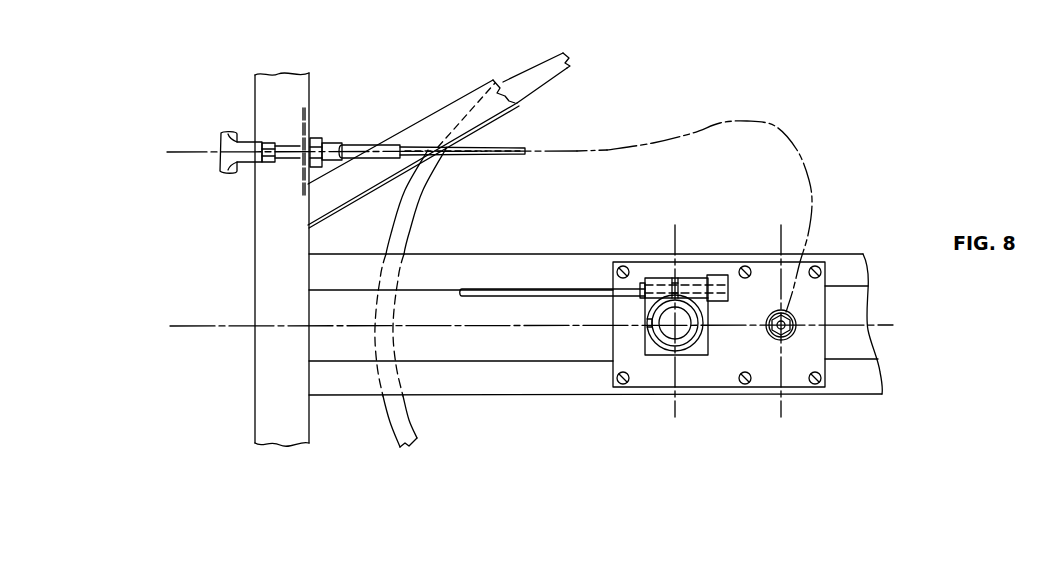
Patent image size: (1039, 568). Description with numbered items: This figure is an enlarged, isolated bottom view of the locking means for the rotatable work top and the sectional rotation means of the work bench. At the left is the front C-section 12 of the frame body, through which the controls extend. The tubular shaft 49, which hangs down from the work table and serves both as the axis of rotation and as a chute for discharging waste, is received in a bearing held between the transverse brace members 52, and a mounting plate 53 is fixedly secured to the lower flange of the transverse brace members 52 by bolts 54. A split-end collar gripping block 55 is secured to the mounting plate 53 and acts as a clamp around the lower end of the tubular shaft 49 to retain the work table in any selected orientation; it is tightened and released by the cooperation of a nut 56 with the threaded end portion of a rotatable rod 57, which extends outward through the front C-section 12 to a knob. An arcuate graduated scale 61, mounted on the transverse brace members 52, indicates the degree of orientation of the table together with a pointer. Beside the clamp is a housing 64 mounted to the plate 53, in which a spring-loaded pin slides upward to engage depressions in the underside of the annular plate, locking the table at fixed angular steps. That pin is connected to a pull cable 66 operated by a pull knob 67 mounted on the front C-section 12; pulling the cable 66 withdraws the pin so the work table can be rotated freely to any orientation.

The front C-section 12 is at (268, 291).
The tubular shaft 49 is at (663, 348).
The transverse brace members 52 is at (437, 267).
The mounting plate 53 is at (817, 310).
The bolts 54 is at (627, 264).
The split-end collar gripping block 55 is at (658, 281).
The nut 56 is at (718, 277).
The rotatable rod 57 is at (485, 291).
The arcuate graduated scale 61 is at (543, 72).
The housing 64 is at (787, 340).
The pull cable 66 is at (356, 148).
The pull knob 67 is at (218, 160).